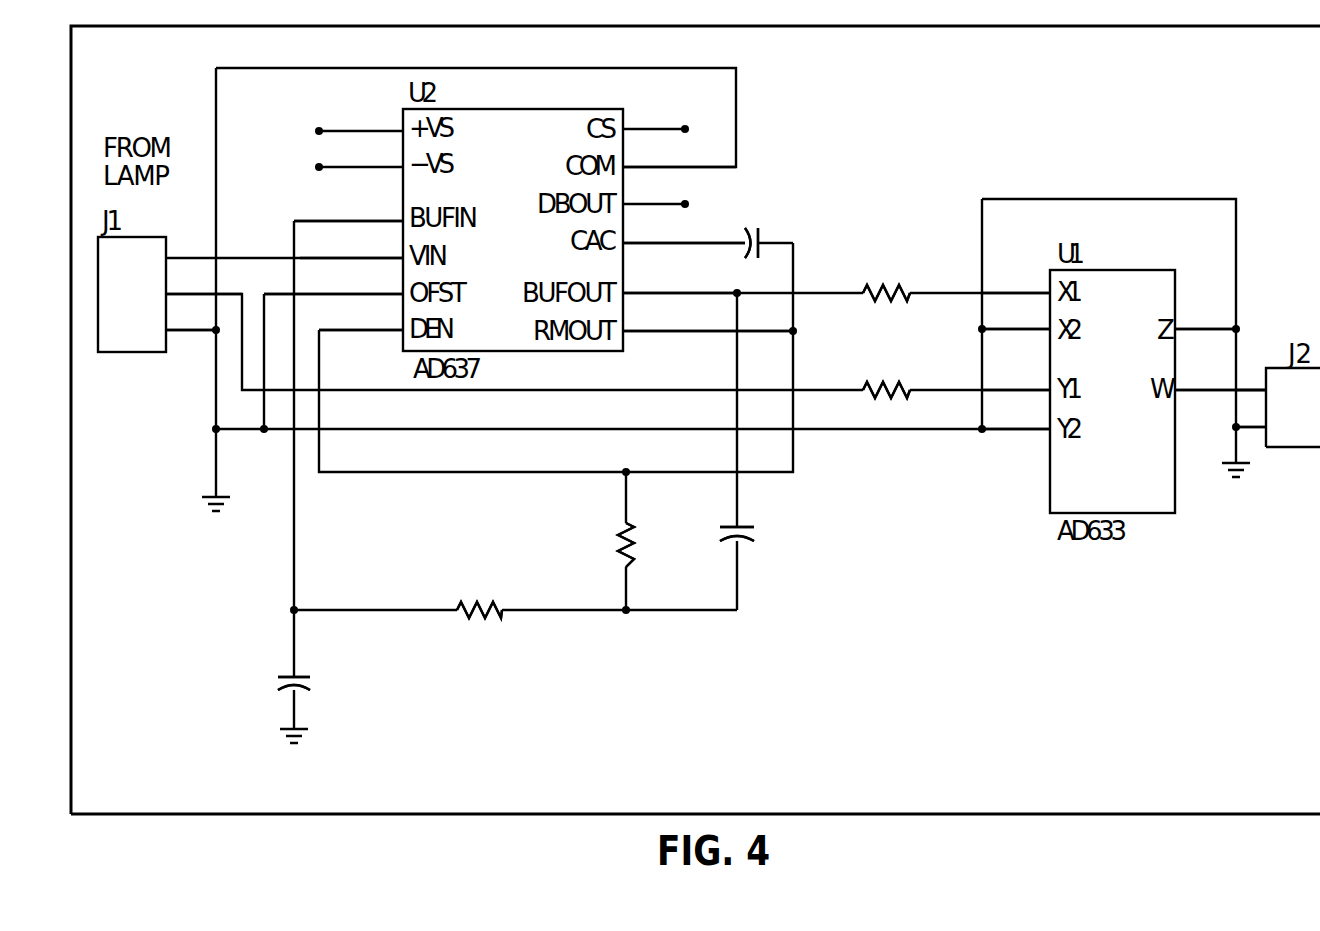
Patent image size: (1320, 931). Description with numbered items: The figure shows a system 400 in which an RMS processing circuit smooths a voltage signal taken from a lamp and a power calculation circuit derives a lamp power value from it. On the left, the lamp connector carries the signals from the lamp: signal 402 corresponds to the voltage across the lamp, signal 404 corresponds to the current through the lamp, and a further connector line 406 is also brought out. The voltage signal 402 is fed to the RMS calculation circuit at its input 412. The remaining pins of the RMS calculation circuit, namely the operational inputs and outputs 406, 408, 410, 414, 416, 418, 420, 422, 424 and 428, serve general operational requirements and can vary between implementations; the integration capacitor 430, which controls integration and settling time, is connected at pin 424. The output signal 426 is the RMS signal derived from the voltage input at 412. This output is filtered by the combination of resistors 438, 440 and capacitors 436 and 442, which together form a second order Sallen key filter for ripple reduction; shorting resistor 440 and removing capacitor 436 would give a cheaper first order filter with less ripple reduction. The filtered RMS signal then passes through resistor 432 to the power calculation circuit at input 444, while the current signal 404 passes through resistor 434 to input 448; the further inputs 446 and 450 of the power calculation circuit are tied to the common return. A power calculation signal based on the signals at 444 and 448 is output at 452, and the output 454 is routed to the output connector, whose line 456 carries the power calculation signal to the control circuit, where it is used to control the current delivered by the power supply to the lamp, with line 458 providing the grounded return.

The RMS measurement circuit 400 is at (1280, 765).
The voltage signal 402 is at (262, 258).
The current signal 404 is at (182, 293).
The operational input/output of RMS calculation circuit 406 is at (262, 222).
The operational input/output of RMS calculation circuit 408 is at (361, 153).
The operational input/output of RMS calculation circuit 410 is at (348, 205).
The voltage signal input of RMS calculation circuit 412 is at (351, 242).
The operational input/output of RMS calculation circuit 414 is at (333, 279).
The operational input/output of RMS calculation circuit 416 is at (361, 314).
The operational input/output of RMS calculation circuit 418 is at (654, 114).
The operational input/output of RMS calculation circuit 420 is at (679, 151).
The operational input/output of RMS calculation circuit 422 is at (654, 188).
The operational input/output of RMS calculation circuit 424 is at (684, 226).
The output signal 426 is at (680, 278).
The operational input/output of RMS calculation circuit 428 is at (708, 315).
The integration capacitor 430 is at (763, 238).
The resistor 432 is at (898, 284).
The resistor 434 is at (898, 381).
The capacitor 436 is at (758, 526).
The resistor 438 is at (620, 550).
The resistor 440 is at (473, 602).
The capacitor 442 is at (286, 675).
The filtered RMS signal input of power calculation circuit 444 is at (1016, 278).
The X2 input pin of U1 446 is at (1016, 312).
The current signal input of power calculation circuit 448 is at (1016, 373).
The Y2 input pin of U1 450 is at (1016, 411).
The power calculation signal output 452 is at (1205, 312).
The W output pin of U1 454 is at (1220, 373).
The control circuit 456 is at (1275, 388).
The J2 connector ground pin 458 is at (1275, 426).